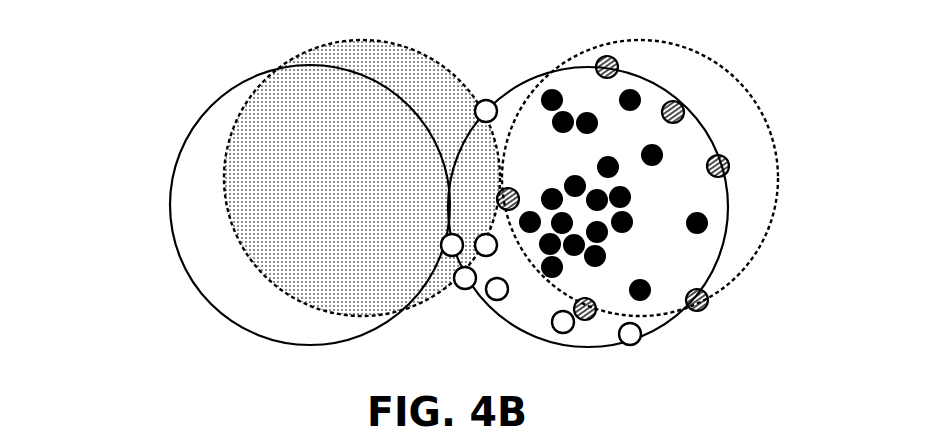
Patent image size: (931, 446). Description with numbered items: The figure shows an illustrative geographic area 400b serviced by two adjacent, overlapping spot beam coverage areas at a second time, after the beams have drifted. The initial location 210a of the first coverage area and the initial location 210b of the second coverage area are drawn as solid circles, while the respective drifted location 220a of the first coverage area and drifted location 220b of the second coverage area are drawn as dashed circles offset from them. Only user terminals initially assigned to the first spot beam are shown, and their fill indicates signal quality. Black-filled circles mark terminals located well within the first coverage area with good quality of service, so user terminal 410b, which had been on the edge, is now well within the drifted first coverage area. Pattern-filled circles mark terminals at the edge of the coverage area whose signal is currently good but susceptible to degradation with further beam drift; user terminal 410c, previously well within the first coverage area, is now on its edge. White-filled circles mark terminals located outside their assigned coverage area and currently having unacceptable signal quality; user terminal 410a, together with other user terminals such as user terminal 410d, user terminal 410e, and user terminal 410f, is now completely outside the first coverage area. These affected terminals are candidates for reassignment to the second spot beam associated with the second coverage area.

The geographic area at second time 400b is at (153, 40).
The initial location of first coverage area 210a is at (530, 78).
The initial location of second coverage area 210b is at (208, 110).
The drifted location of first coverage area 220a is at (760, 252).
The drifted location of second coverage area 220b is at (313, 47).
The user terminal 410a is at (441, 245).
The user terminal 410b is at (607, 56).
The user terminal 410c is at (504, 188).
The user terminal 410d is at (475, 111).
The user terminal 410e is at (480, 235).
The user terminal 410f is at (460, 288).